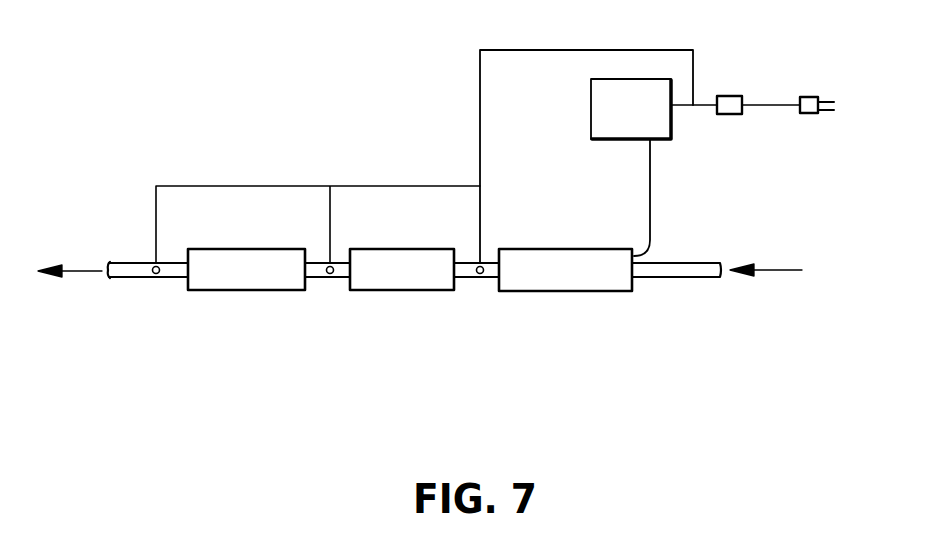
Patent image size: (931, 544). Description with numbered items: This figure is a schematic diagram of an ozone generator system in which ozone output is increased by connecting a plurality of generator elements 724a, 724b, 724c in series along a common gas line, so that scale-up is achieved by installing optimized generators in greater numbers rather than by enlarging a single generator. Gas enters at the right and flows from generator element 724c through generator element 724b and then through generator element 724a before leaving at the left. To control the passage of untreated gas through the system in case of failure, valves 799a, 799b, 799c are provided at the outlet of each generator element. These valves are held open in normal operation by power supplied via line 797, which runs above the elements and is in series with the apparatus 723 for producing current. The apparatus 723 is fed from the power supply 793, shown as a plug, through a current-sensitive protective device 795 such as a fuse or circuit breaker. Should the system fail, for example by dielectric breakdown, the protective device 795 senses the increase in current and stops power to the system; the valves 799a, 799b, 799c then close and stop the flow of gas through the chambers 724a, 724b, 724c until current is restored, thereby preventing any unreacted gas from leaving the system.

The apparatus for producing current 723 is at (672, 124).
The generator element 724a is at (265, 290).
The generator element 724b is at (425, 290).
The generator element 724c is at (580, 291).
The power supply 793 is at (786, 107).
The current-sensitive protective device 795 is at (737, 95).
The line 797 is at (480, 118).
The valve 799a is at (155, 276).
The valve 799b is at (330, 276).
The valve 799c is at (479, 277).